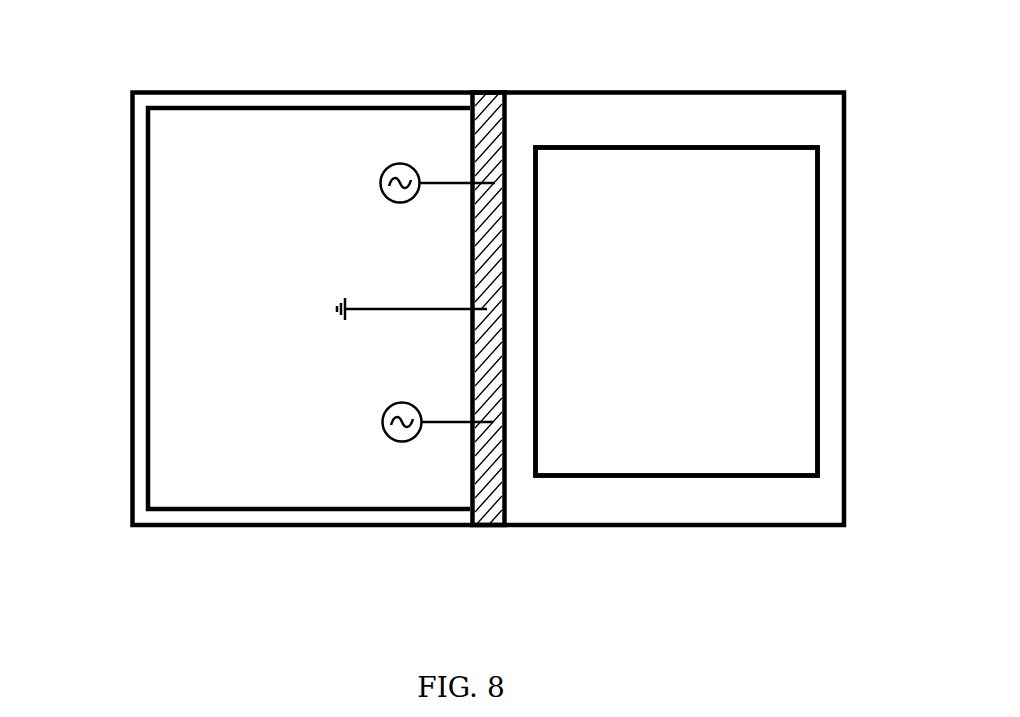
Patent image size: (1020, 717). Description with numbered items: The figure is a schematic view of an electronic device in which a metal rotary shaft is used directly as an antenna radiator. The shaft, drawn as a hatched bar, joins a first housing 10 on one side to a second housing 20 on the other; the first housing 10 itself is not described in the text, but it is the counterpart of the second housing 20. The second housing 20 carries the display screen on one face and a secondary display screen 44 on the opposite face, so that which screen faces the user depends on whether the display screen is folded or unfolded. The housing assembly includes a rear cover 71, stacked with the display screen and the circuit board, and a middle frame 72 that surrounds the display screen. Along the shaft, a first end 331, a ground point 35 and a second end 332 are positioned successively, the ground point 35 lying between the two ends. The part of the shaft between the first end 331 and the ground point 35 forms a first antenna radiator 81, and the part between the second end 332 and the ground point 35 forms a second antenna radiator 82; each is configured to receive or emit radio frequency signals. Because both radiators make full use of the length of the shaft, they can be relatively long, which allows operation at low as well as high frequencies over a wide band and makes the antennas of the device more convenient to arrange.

The first housing 10 is at (243, 81).
The second housing 20 is at (707, 82).
The ground point 35 is at (485, 303).
The secondary display screen 44 is at (757, 207).
The rear cover 71 is at (252, 290).
The middle frame 72 is at (387, 183).
The first antenna radiator 81 is at (485, 128).
The second antenna radiator 82 is at (487, 462).
The first end 331 is at (487, 92).
The second end 332 is at (483, 527).